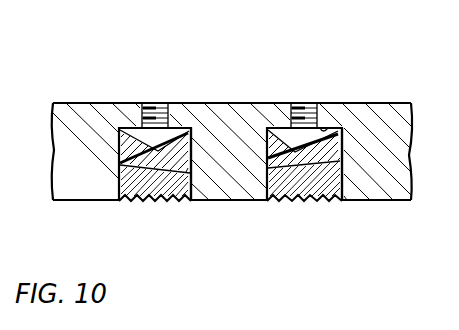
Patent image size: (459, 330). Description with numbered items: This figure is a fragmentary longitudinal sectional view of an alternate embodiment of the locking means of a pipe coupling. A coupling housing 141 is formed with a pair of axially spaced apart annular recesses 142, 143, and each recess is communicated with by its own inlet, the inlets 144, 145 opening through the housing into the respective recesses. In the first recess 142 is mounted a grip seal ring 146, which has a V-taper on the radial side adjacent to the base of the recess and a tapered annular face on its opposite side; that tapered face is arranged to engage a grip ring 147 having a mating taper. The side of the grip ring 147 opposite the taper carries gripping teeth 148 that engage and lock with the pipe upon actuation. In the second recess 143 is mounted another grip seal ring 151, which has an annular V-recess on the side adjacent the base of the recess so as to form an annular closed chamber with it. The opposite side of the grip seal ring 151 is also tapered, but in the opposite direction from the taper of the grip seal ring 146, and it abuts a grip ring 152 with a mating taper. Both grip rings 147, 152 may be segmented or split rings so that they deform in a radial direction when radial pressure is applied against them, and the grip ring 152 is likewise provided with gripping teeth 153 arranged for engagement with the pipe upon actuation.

The coupling housing 141 is at (188, 104).
The annular recess 142 is at (136, 128).
The annular recess 143 is at (325, 130).
The inlet 144 is at (155, 103).
The inlet 145 is at (302, 103).
The grip seal ring 146 is at (193, 146).
The grip ring 147 is at (141, 188).
The gripping teeth 148 is at (160, 200).
The grip seal ring 151 is at (343, 138).
The grip ring 152 is at (320, 185).
The gripping teeth 153 is at (285, 199).